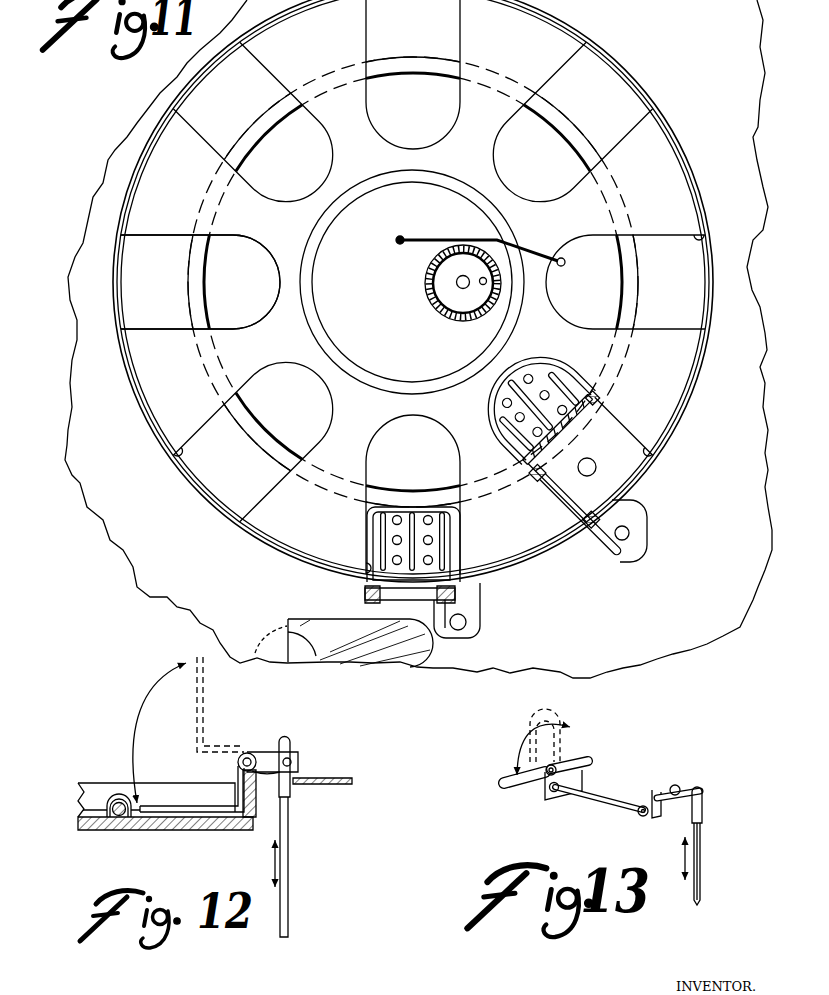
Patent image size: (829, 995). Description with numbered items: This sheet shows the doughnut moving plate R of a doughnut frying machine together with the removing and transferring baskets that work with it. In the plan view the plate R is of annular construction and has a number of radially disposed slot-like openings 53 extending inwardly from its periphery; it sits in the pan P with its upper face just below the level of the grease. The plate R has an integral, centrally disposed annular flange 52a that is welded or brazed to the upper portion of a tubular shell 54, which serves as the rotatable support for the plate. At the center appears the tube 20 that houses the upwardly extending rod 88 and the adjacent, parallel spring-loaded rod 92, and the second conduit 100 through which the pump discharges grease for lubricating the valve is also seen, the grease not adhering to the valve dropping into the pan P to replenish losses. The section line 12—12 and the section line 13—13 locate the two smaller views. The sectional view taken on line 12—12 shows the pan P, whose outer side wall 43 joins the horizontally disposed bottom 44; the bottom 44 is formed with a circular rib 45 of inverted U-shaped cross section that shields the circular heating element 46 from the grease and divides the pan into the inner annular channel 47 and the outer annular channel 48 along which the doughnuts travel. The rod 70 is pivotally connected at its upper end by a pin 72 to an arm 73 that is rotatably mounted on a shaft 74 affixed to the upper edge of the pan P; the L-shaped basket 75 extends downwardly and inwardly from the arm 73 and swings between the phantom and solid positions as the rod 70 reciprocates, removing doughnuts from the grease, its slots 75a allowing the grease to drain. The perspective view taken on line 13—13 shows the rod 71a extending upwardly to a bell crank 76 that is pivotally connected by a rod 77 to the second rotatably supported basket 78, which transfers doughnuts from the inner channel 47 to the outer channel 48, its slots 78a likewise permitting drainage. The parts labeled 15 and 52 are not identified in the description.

In FIG. 11, the section line 12— 12 is at (367, 467).
In FIG. 11, the section line 13— 13 is at (462, 398).
In FIG. 11, the mounting bracket 15 is at (455, 523).
In FIG. 11, the tube 20 is at (452, 306).
In FIG. 12, the outer side wall 43 is at (254, 808).
In FIG. 12, the bottom 44 is at (168, 829).
In FIG. 11, the circular rib 45 is at (213, 300).
In FIG. 12, the circular heating element 46 is at (118, 818).
In FIG. 11, the inner annular channel 47 is at (250, 287).
In FIG. 11, the outer annular channel 48 is at (156, 287).
In FIG. 11, the rotor disc 52 is at (165, 416).
In FIG. 11, the annular flange 52a is at (343, 362).
In FIG. 11, the slot-like openings 53 is at (700, 245).
In FIG. 11, the tubular shell 54 is at (372, 374).
In FIG. 11, the rod 70 is at (458, 631).
In FIG. 12, the rod 70 is at (290, 840).
In FIG. 11, the rod 71a is at (630, 534).
In FIG. 13, the rod 71a is at (701, 848).
In FIG. 12, the pin 72 is at (292, 761).
In FIG. 12, the arm 73 is at (267, 750).
In FIG. 12, the shaft 74 is at (238, 764).
In FIG. 12, the L-shaped basket 75 is at (203, 718).
In FIG. 11, the slots 75a is at (445, 543).
In FIG. 13, the bell crank 76 is at (683, 790).
In FIG. 13, the rod 77 is at (612, 798).
In FIG. 11, the second rotatably supported basket 78 is at (551, 368).
In FIG. 13, the second rotatably supported basket 78 is at (562, 747).
In FIG. 11, the slots 78a is at (584, 399).
In FIG. 11, the rod 88 is at (461, 288).
In FIG. 11, the spring-loaded rod 92 is at (483, 285).
In FIG. 11, the second conduit 100 is at (432, 236).
In FIG. 11, the pan P is at (204, 505).
In FIG. 12, the pan P is at (93, 828).
In FIG. 11, the doughnut moving plate R is at (168, 382).